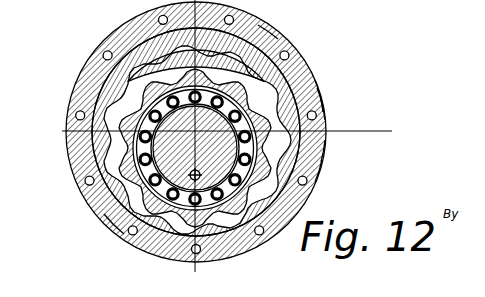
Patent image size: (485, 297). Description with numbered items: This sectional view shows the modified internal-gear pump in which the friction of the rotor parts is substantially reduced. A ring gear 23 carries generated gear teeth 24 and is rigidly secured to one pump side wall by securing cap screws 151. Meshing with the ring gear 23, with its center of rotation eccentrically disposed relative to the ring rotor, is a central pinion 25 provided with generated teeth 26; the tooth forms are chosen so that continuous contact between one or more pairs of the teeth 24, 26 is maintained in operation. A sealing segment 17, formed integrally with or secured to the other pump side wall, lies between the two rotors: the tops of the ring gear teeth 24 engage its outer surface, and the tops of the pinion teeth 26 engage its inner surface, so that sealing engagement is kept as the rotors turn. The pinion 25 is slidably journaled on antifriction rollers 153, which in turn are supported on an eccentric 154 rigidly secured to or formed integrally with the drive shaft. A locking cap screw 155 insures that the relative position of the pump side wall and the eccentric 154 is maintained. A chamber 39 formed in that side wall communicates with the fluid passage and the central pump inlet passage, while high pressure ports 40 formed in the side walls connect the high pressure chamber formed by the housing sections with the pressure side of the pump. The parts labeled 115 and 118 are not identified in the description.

The sealing segment 17 is at (118, 32).
The chamber 39 is at (79, 86).
The pump body 115 is at (270, 27).
The cover plate 118 is at (342, 4).
The generated gear teeth 24 is at (314, 78).
The ring gear 23 is at (318, 88).
The high pressure ports 40 is at (320, 92).
The securing cap screws 151 is at (318, 108).
The eccentric 154 is at (330, 130).
The generated teeth 26 is at (322, 152).
The antifriction rollers 153 is at (318, 172).
The central pinion 25 is at (263, 107).
The locking cap screw 155 is at (112, 223).